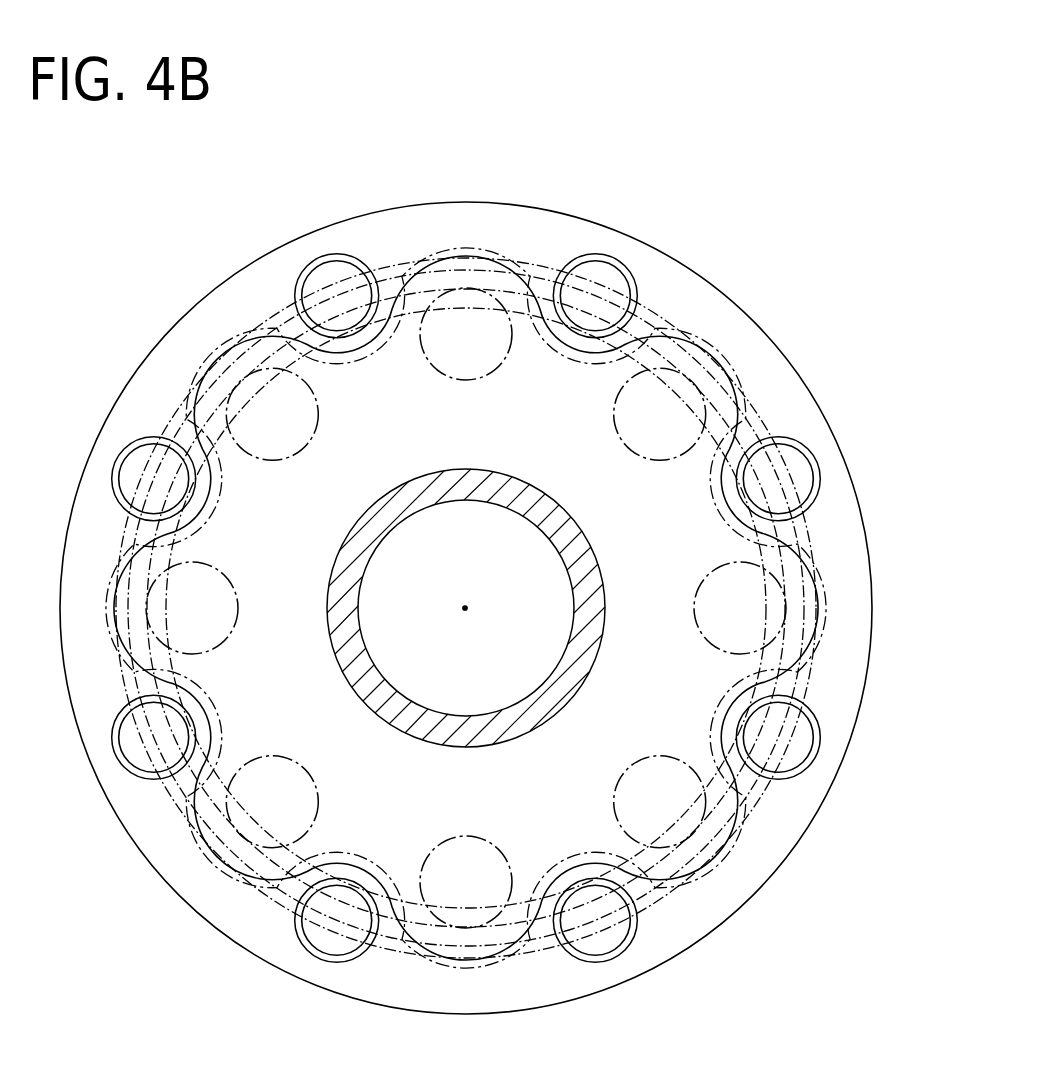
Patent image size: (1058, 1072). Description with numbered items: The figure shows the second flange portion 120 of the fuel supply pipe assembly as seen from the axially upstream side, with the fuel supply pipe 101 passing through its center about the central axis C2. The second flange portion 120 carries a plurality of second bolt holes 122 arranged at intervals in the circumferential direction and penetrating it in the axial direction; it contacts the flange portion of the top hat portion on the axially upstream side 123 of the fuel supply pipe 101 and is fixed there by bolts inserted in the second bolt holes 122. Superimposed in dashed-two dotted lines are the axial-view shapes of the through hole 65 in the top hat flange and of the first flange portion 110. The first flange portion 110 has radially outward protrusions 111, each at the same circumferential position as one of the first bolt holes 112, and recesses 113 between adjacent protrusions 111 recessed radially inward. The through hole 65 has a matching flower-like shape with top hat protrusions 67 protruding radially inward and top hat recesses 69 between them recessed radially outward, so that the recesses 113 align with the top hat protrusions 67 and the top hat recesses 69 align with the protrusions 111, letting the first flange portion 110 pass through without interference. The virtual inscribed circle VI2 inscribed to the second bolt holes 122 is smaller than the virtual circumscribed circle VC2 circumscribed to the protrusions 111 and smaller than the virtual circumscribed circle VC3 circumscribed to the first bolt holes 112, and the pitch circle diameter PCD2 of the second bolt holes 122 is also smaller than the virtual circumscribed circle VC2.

The second flange portion 120 is at (505, 571).
The second bolt holes 122 is at (814, 470).
The axially upstream side 123 is at (688, 934).
The top hat protrusions 67 is at (748, 522).
The top hat recesses 69 is at (528, 608).
The through hole 65 is at (528, 608).
The protrusions 111 is at (817, 612).
The first bolt holes 112 is at (800, 668).
The first flange portion 110 is at (528, 608).
The recesses 113 is at (712, 731).
The fuel supply pipe 101 is at (494, 736).
The central axis C2 is at (466, 606).
The virtual circumscribed circle VC3 is at (495, 255).
The pitch circle diameter PCD2 is at (582, 272).
The virtual circumscribed circle VC2 is at (658, 306).
The virtual inscribed circle VI2 is at (742, 406).